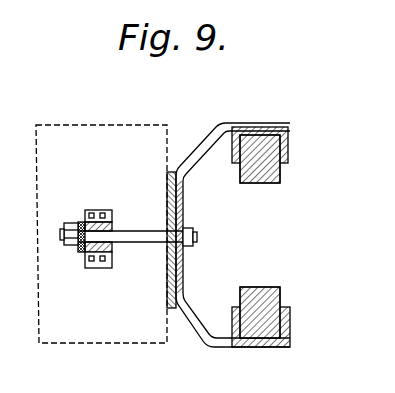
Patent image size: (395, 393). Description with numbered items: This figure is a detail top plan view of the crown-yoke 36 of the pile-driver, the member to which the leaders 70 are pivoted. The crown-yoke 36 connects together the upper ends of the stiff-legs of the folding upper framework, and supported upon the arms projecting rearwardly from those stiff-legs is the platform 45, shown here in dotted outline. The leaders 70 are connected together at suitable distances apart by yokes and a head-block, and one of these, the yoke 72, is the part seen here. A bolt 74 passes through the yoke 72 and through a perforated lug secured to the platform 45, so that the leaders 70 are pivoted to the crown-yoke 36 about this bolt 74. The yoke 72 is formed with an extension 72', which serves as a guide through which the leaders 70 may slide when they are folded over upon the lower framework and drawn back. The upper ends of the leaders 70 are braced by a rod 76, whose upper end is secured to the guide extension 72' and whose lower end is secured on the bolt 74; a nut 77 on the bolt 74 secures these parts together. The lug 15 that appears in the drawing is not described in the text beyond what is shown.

The bracket 15 is at (118, 214).
The crown-yoke 36 is at (168, 296).
The platform 45 is at (100, 345).
The leaders 70 is at (263, 178).
The yoke 72 is at (233, 235).
The extension 72' is at (281, 237).
The bolt 74 is at (147, 243).
The rod 76 is at (82, 253).
The nut 77 is at (75, 246).